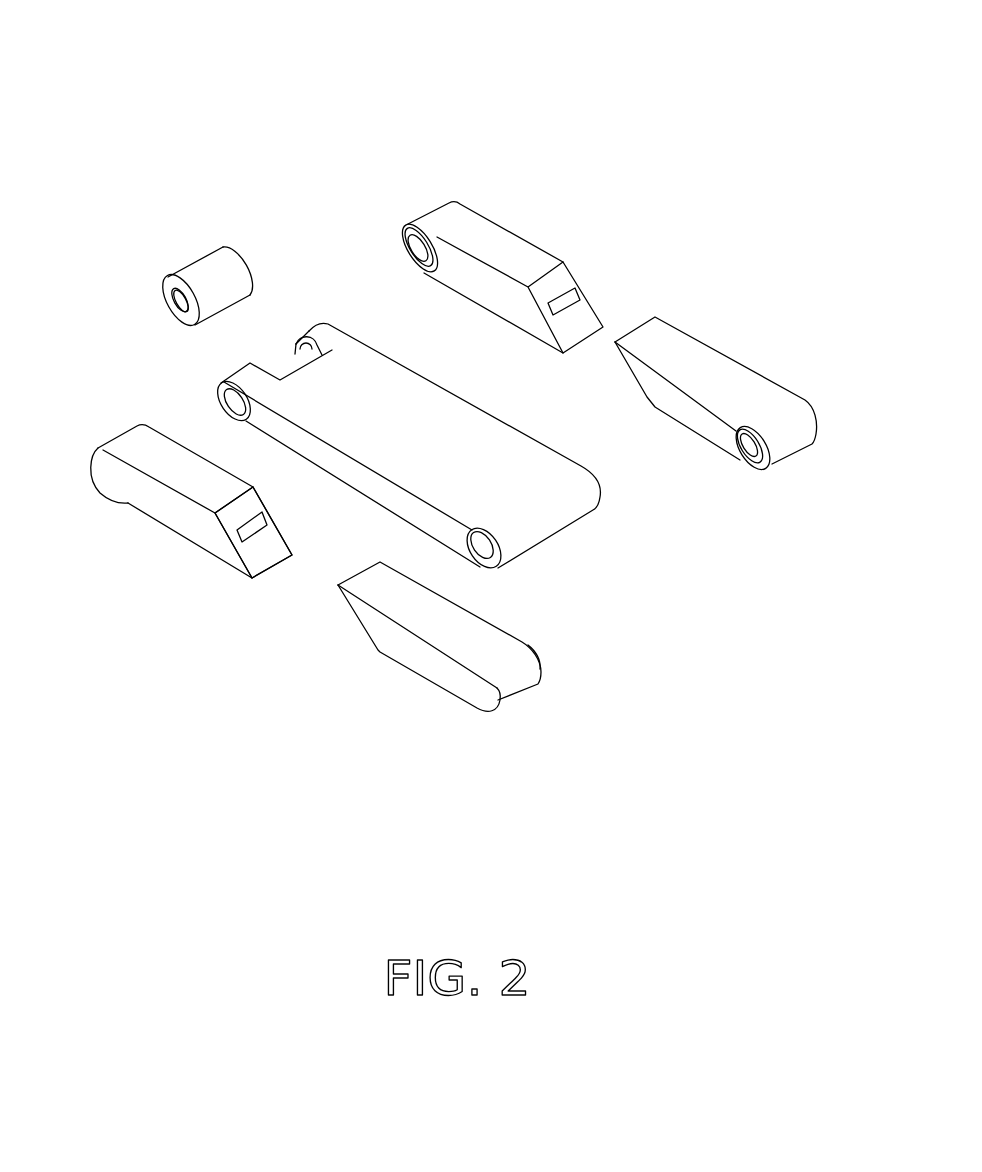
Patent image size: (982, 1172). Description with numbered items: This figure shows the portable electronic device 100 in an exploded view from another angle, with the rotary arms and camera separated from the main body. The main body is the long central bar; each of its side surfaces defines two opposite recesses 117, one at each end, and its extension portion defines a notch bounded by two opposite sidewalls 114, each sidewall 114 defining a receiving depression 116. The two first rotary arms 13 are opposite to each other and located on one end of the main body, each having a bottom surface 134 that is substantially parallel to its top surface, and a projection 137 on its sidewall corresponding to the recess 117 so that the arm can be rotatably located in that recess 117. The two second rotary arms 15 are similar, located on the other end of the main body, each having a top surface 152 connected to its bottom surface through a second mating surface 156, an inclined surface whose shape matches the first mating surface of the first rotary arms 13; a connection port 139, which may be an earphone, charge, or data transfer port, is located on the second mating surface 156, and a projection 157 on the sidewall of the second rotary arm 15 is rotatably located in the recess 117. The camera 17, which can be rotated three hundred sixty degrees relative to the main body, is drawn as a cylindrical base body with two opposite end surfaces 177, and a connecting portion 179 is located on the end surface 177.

The portable electronic device 100 is at (411, 50).
The second rotary arm 15 is at (328, 394).
The top surface 152 is at (527, 258).
The projection 157 is at (411, 248).
The connection port 139 is at (246, 533).
The second mating surface 156 is at (267, 552).
The first rotary arm 13 is at (588, 512).
The bottom surface 134 is at (677, 345).
The projection 137 is at (753, 462).
The camera 17 is at (160, 269).
The end surface 177 is at (167, 282).
The connecting portion 179 is at (178, 302).
The sidewall 114 is at (308, 337).
The receiving depression 116 is at (305, 354).
The recess 117 is at (362, 429).